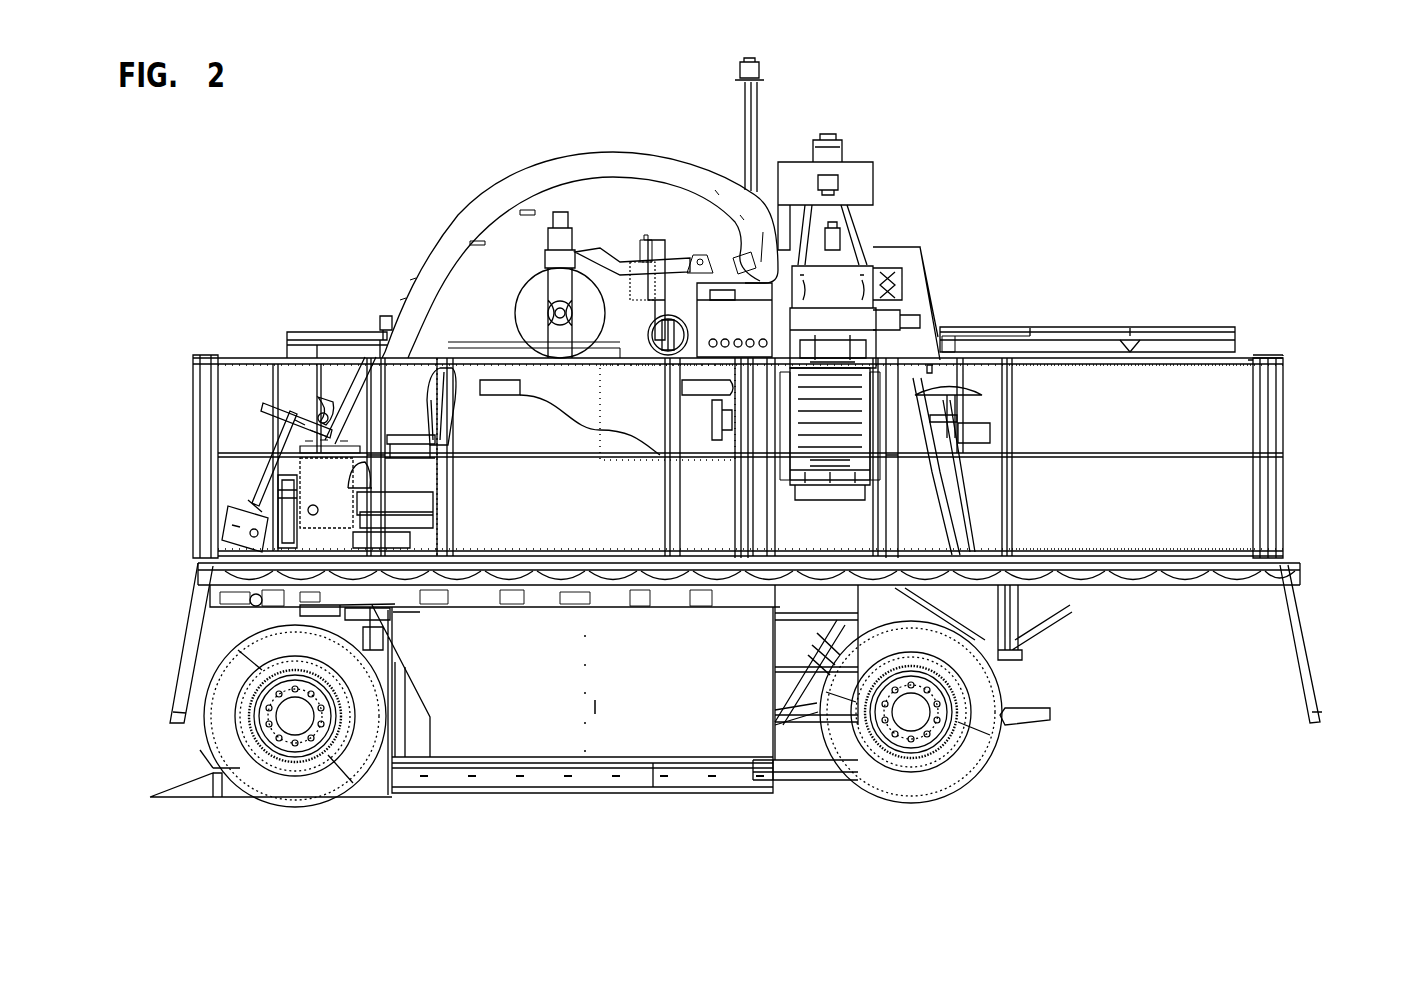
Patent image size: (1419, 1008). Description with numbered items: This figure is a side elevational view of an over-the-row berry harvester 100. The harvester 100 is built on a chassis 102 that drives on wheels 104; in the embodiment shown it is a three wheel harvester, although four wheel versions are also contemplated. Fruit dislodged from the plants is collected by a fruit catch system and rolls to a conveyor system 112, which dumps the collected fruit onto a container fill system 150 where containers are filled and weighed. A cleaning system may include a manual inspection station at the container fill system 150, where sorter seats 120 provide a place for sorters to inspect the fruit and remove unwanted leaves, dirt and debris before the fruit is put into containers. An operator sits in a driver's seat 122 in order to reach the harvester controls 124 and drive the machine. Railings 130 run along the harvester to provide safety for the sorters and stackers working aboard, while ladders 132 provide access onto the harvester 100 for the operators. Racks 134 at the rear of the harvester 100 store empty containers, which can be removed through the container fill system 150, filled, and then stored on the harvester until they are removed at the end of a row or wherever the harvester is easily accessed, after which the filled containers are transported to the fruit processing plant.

The berry harvester 100 is at (1022, 183).
The chassis 102 is at (335, 292).
The wheels 104 is at (268, 790).
The conveyor system 112 is at (540, 178).
The sorter seats 120 is at (715, 384).
The driver's seat 122 is at (410, 470).
The harvester controls 124 is at (318, 395).
The railings 130 is at (1241, 360).
The ladders 132 is at (192, 650).
The racks 134 is at (1190, 328).
The container fill system 150 is at (812, 512).